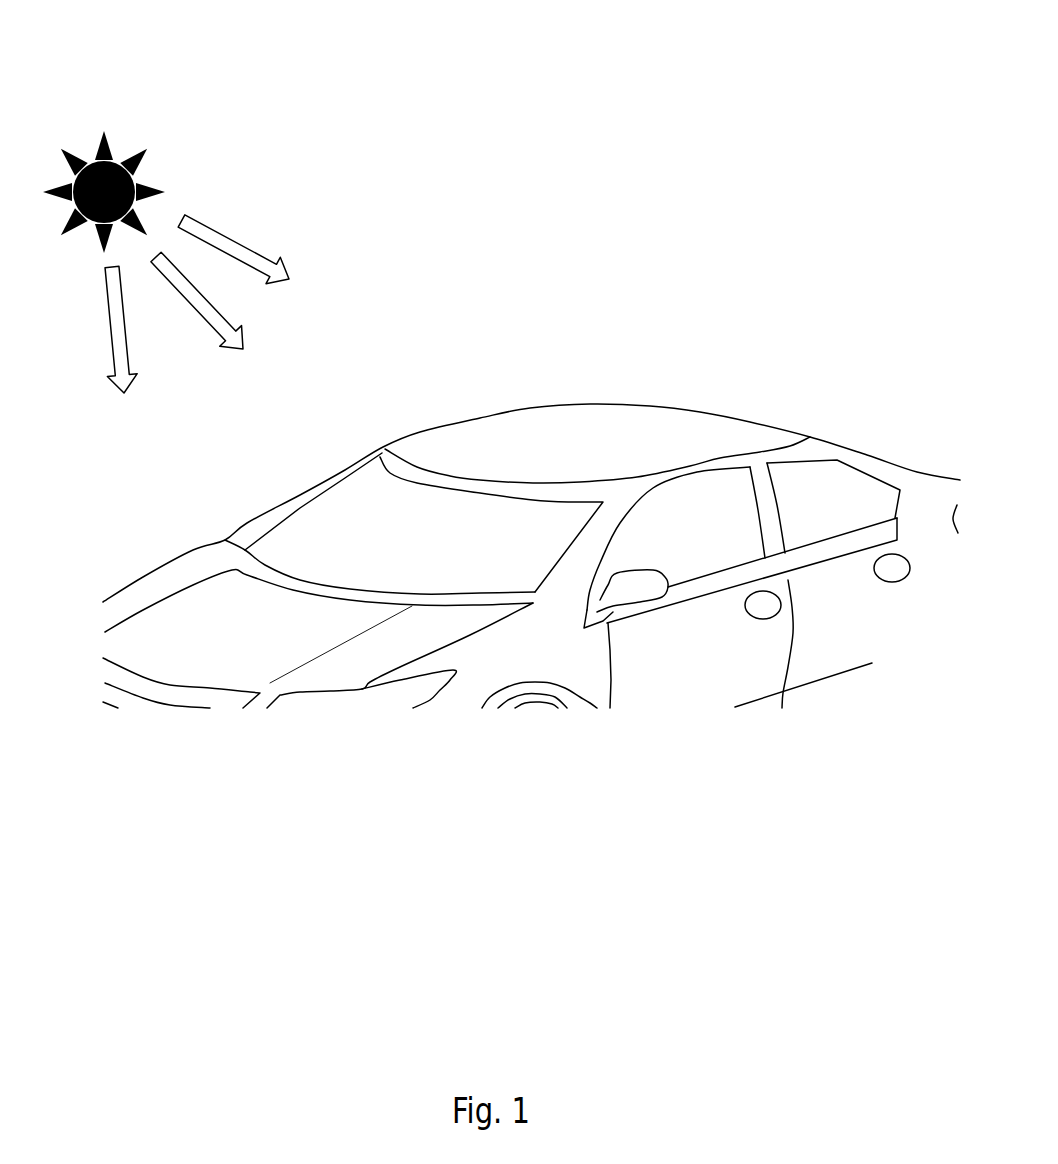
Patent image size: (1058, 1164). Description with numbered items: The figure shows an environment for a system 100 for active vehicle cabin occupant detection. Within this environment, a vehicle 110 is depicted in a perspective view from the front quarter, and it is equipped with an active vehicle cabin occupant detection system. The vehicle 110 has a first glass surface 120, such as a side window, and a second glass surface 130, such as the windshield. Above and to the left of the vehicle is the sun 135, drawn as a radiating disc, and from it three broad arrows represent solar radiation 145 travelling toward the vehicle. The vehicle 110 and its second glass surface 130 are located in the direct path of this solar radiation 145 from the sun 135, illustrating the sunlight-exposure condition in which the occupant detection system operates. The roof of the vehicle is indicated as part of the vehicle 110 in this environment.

The system 100 is at (535, 49).
The vehicle 110 is at (620, 433).
The first glass surface 120 is at (708, 552).
The second glass surface 130 is at (288, 528).
The sun 135 is at (166, 134).
The solar radiation 145 is at (240, 216).